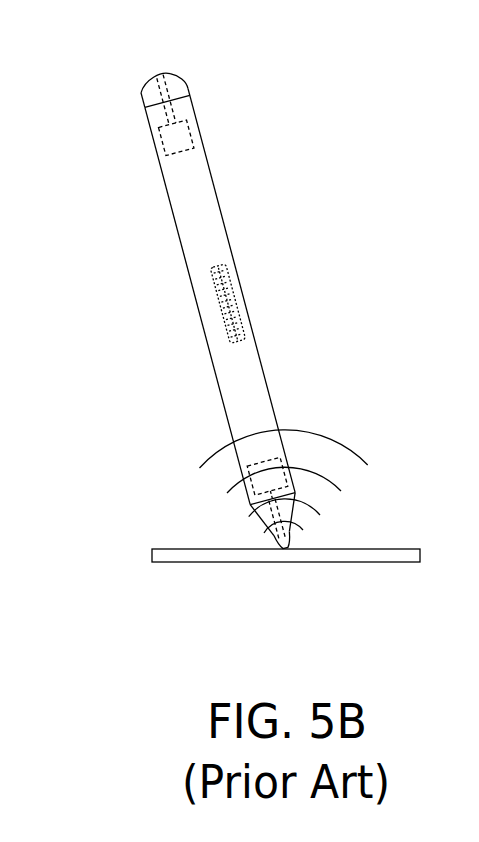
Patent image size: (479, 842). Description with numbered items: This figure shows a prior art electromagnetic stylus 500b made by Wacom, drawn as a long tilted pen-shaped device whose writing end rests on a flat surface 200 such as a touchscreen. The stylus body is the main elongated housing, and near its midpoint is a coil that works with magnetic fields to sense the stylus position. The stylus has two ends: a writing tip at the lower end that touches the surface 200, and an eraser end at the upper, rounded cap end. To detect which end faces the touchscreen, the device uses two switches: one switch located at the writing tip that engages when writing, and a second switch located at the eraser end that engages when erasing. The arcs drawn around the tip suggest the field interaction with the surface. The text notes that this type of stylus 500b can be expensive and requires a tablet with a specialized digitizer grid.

The stylus 500b is at (243, 311).
The touch surface 200 is at (395, 548).